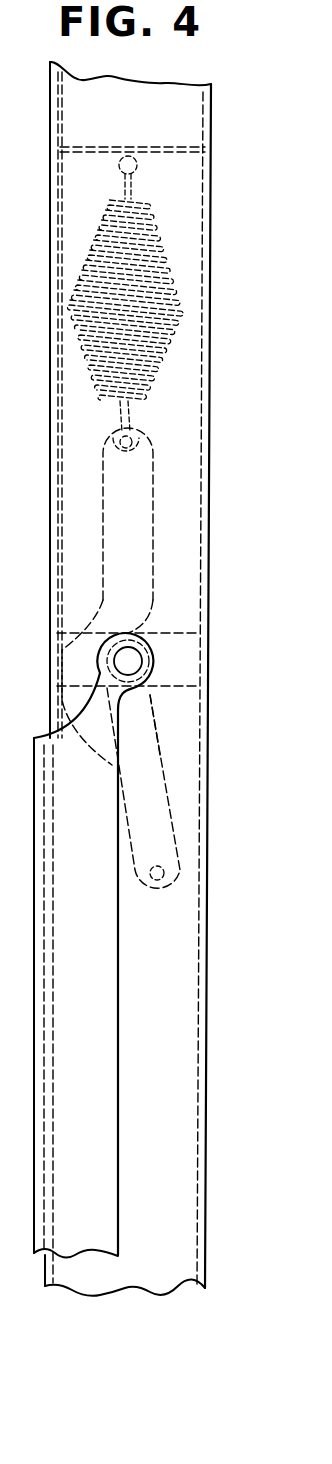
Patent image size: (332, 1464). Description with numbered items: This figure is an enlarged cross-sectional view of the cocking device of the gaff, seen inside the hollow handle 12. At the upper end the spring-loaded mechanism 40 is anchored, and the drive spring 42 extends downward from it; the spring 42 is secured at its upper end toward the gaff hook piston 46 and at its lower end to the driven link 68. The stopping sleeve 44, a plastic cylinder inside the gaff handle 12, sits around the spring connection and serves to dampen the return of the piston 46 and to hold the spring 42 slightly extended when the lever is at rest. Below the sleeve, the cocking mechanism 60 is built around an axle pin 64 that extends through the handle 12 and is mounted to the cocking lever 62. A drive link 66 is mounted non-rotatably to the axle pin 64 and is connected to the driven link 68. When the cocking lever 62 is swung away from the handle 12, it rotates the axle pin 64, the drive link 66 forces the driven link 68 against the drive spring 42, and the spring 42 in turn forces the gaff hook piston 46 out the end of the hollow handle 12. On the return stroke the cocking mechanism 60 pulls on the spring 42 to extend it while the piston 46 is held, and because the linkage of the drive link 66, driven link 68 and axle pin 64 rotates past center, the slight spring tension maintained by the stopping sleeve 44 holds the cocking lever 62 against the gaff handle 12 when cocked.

The hollow handle 12 is at (213, 338).
The gaff hook piston 46 is at (195, 117).
The spring-loaded mechanism 40 is at (137, 173).
The drive spring 42 is at (178, 272).
The stopping sleeve 44 is at (172, 427).
The driven link 68 is at (152, 560).
The cocking mechanism 60 is at (130, 633).
The axle pin 64 is at (133, 660).
The drive link 66 is at (160, 713).
The cocking lever 62 is at (100, 950).